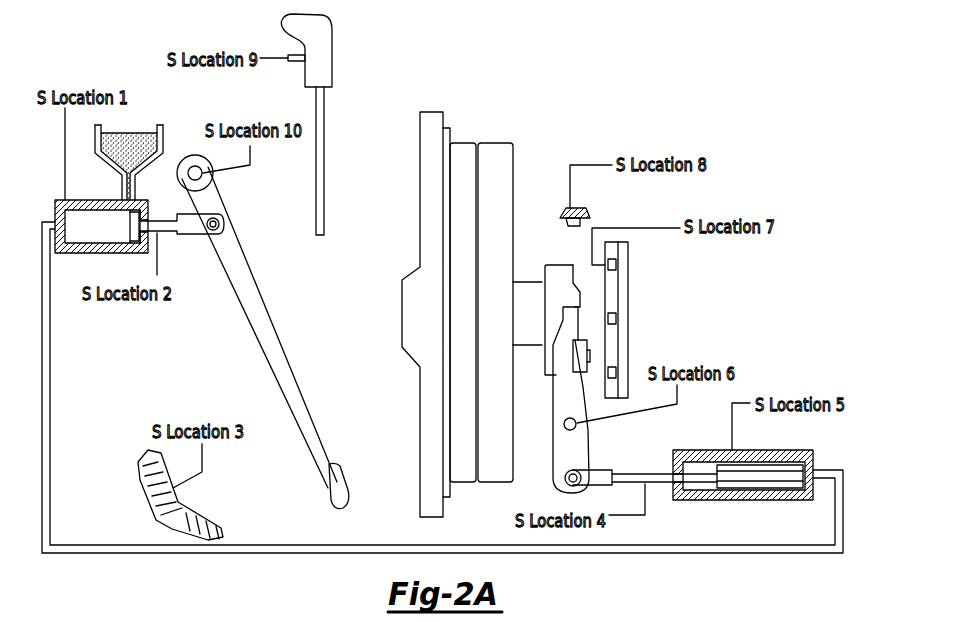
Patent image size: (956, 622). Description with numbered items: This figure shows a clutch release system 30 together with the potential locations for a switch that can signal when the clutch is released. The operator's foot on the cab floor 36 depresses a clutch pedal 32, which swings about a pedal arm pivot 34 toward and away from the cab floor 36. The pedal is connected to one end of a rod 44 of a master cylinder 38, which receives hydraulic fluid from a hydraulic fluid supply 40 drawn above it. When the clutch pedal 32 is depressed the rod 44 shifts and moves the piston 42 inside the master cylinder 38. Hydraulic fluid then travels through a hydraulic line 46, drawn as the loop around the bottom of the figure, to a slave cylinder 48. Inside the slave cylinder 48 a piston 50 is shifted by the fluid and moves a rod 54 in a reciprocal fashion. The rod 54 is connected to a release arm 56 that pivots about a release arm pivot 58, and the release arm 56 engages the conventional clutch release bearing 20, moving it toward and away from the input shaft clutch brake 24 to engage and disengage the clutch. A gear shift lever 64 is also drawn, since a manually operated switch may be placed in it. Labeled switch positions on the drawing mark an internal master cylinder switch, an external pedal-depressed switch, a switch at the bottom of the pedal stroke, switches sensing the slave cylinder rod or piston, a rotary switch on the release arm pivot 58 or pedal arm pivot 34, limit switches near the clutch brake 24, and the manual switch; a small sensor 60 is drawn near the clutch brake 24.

The clutch release bearing 20 is at (548, 264).
The input shaft clutch brake 24 is at (630, 293).
The clutch release system 30 is at (597, 78).
The clutch pedal 32 is at (338, 478).
The pedal arm pivot 34 is at (182, 165).
The cab floor 36 is at (188, 515).
The master cylinder 38 is at (92, 202).
The hydraulic fluid supply 40 is at (145, 132).
The piston 42 is at (121, 225).
The rod 44 is at (167, 233).
The hydraulic line 46 is at (50, 384).
The slave cylinder 48 is at (737, 500).
The piston 50 is at (714, 468).
The rod 54 is at (637, 474).
The release arm 56 is at (566, 461).
The release arm pivot 58 is at (564, 418).
The sensor 60 is at (590, 216).
The gear shift lever 64 is at (332, 56).